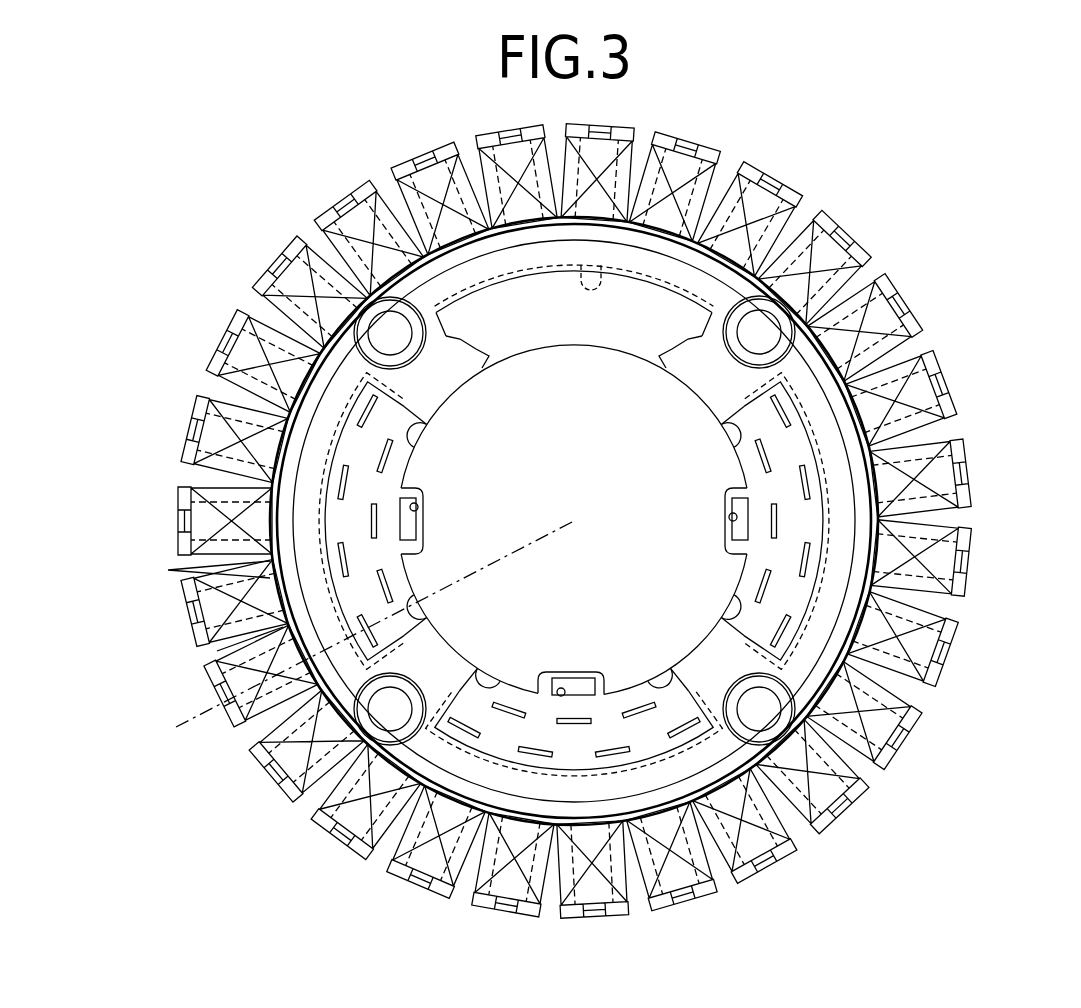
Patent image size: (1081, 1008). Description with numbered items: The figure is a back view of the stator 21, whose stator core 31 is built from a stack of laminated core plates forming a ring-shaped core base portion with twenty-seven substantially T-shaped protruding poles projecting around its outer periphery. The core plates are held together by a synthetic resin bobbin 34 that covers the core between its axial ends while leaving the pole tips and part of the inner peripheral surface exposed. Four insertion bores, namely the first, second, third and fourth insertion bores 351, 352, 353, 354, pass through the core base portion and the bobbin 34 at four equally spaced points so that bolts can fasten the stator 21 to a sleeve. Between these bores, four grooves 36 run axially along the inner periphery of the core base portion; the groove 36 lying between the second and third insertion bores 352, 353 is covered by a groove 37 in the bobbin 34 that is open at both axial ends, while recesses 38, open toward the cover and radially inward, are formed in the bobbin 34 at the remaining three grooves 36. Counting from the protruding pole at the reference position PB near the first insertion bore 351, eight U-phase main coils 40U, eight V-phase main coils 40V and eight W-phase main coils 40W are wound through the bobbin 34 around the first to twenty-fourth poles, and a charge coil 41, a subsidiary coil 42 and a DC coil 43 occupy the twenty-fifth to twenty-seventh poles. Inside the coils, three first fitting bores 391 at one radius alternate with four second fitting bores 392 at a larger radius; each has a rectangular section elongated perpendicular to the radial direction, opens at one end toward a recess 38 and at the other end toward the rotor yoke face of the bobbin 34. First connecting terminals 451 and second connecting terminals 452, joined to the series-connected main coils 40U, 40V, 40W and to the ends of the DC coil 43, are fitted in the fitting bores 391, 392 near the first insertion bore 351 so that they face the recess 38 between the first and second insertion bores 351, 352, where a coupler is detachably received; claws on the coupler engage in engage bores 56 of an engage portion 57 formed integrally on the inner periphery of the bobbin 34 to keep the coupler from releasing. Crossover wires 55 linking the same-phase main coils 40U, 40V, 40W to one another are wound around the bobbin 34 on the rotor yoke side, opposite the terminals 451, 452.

The stator 21 is at (290, 216).
The U-phase main coils 40U is at (575, 506).
The V-phase main coils 40V is at (575, 520).
The W-phase main coils 40W is at (561, 511).
The stator core 31 is at (550, 282).
The bobbin 34 is at (426, 658).
The grooves 36 is at (600, 268).
The groove 37 is at (465, 340).
The recesses 38 is at (424, 436).
The first insertion bore 351 is at (380, 720).
The second insertion bore 352 is at (404, 340).
The third insertion bore 353 is at (745, 340).
The fourth insertion bore 354 is at (745, 700).
The first fitting bores 391 is at (758, 452).
The second fitting bores 392 is at (801, 486).
The charge coil 41 is at (412, 884).
The subsidiary coil 42 is at (343, 836).
The DC coil 43 is at (278, 776).
The first connecting terminals 451 is at (423, 528).
The second connecting terminals 452 is at (598, 796).
The crossover wires 55 is at (245, 640).
The engage bores 56 is at (470, 490).
The engage portion 57 is at (420, 520).
The reference position PB is at (342, 641).